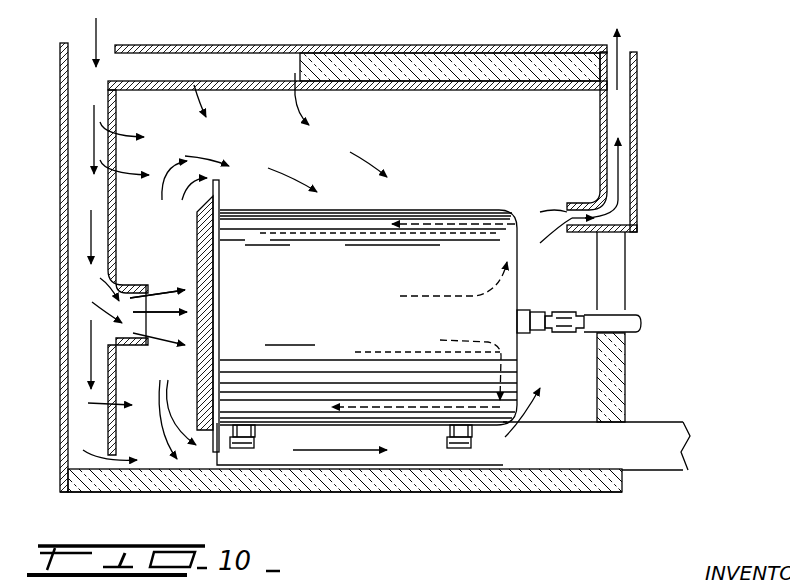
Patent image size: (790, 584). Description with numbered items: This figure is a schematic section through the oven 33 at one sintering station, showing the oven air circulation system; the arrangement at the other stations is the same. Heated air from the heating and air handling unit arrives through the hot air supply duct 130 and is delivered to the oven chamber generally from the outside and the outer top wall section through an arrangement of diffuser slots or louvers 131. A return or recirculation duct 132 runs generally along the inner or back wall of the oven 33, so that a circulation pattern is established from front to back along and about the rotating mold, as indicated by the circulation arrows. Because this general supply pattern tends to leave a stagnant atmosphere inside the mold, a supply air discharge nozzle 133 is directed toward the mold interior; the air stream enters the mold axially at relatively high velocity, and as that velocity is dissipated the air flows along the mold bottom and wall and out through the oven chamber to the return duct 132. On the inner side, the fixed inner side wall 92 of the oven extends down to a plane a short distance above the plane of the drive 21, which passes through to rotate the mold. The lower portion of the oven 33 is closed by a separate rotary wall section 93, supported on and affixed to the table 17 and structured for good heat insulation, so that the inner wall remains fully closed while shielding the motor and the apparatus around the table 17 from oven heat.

The table 17 is at (541, 409).
The drive 21 is at (580, 307).
The oven 33 is at (386, 42).
The inner side wall 92 is at (600, 122).
The wall section 93 is at (612, 388).
The hot air supply duct 130 is at (84, 37).
The diffuser slots or louvers 131 is at (193, 80).
The return duct 132 is at (628, 52).
The supply air discharge nozzle 133 is at (127, 296).